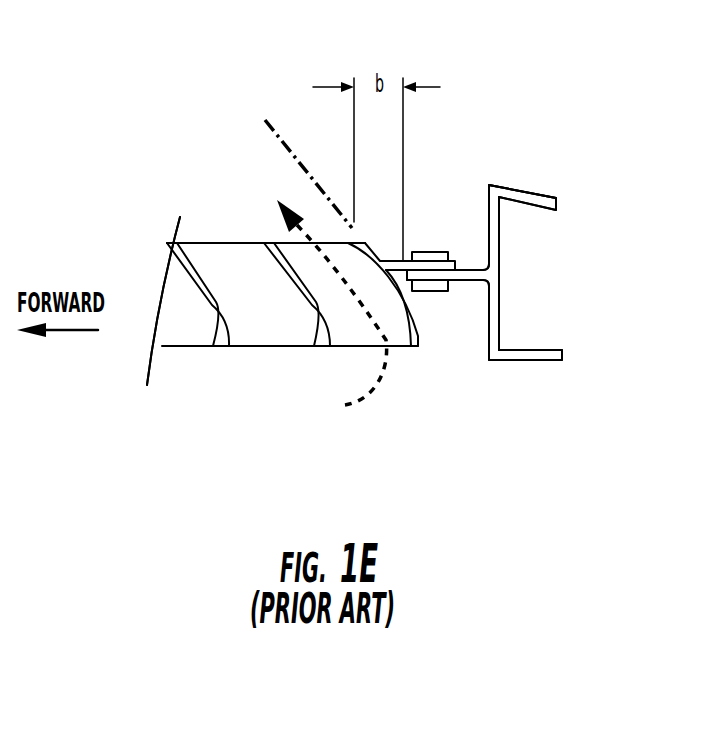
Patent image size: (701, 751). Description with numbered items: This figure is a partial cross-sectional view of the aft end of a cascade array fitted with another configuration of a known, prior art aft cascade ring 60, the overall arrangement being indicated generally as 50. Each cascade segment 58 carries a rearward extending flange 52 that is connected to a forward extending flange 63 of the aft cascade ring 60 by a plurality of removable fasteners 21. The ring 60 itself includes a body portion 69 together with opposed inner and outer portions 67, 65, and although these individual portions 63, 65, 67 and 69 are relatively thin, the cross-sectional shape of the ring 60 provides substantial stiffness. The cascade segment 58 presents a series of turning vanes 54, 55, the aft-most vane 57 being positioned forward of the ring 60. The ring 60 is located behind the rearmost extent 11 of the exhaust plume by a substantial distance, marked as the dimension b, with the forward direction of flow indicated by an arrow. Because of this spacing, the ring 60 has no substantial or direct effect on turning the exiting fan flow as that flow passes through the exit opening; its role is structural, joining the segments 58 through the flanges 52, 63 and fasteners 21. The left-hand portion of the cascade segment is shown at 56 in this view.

The rearmost extent of the exhaust plume 11 is at (285, 138).
The removable fasteners 21 is at (428, 292).
The prior art louver assembly 50 is at (149, 123).
The rearward extending flange 52 is at (392, 261).
The louver 54 is at (310, 306).
The louver 55 is at (210, 306).
The band 56 is at (213, 256).
The aft-most vane 57 is at (388, 338).
The cascade segment 58 is at (245, 243).
The aft cascade ring 60 is at (552, 196).
The forward extending flange 63 is at (468, 280).
The outer portion 65 is at (515, 190).
The inner portion 67 is at (531, 360).
The body portion 69 is at (499, 310).